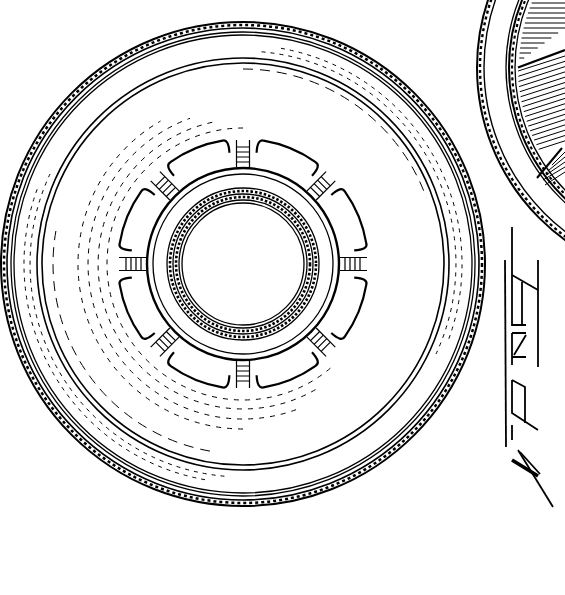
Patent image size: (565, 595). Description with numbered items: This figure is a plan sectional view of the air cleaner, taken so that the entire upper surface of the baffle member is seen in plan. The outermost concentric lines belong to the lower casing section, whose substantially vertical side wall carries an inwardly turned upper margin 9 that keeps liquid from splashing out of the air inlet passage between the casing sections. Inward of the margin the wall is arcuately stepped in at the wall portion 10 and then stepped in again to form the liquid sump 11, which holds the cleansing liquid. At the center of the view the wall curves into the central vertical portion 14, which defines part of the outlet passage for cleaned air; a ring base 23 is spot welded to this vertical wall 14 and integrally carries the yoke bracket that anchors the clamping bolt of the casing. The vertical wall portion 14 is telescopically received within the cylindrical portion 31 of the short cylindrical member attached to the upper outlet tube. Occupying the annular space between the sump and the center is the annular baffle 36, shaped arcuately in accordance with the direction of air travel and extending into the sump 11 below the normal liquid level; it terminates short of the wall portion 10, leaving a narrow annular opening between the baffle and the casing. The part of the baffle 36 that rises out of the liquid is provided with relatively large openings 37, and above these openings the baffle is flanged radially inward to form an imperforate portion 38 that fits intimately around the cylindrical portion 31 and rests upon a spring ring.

The inwardly turned upper margin 9 is at (420, 462).
The arcuately stepped-in wall portion 10 is at (342, 505).
The liquid sump 11 is at (293, 503).
The central vertical wall portion 14 is at (251, 213).
The ring base 23 is at (270, 232).
The cylindrical portion 31 is at (211, 229).
The annular baffle 36 is at (230, 505).
The openings 37 is at (262, 145).
The imperforate portion 38 is at (188, 248).